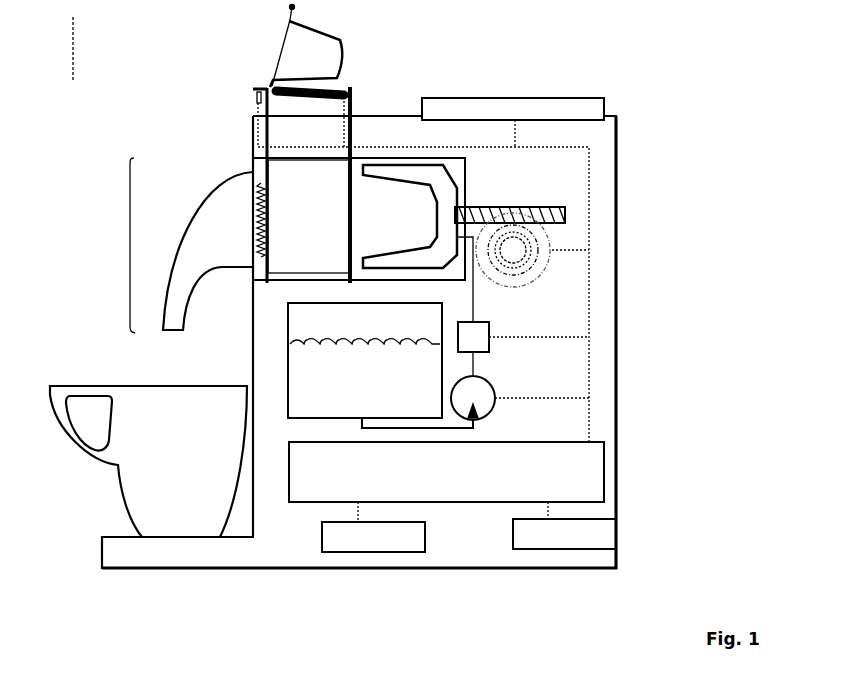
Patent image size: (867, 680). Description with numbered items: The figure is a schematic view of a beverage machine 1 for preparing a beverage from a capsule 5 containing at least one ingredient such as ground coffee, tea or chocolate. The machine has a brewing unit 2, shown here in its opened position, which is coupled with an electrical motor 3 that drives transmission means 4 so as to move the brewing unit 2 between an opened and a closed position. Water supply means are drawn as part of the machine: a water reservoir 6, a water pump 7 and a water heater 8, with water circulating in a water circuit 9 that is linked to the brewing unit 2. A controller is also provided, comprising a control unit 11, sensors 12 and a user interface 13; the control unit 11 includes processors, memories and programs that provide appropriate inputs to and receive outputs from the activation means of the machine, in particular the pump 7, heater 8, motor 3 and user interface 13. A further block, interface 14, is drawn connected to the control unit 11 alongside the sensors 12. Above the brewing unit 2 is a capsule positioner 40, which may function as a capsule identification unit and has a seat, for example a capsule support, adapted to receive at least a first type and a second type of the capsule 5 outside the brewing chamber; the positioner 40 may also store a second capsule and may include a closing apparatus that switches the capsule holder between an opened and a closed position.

The beverage machine 1 is at (72, 40).
The brewing unit 2 is at (128, 178).
The electrical motor 3 is at (522, 262).
The transmission means 4 is at (537, 250).
The capsule 5 is at (288, 18).
The water reservoir 6 is at (288, 340).
The water pump 7 is at (494, 408).
The water heater 8 is at (490, 351).
The water circuit 9 is at (476, 292).
The control unit 11 is at (303, 504).
The sensors 12 is at (386, 553).
The user interface 13 is at (560, 98).
The communication interface 14 is at (541, 550).
The capsule positioner 40 is at (255, 87).